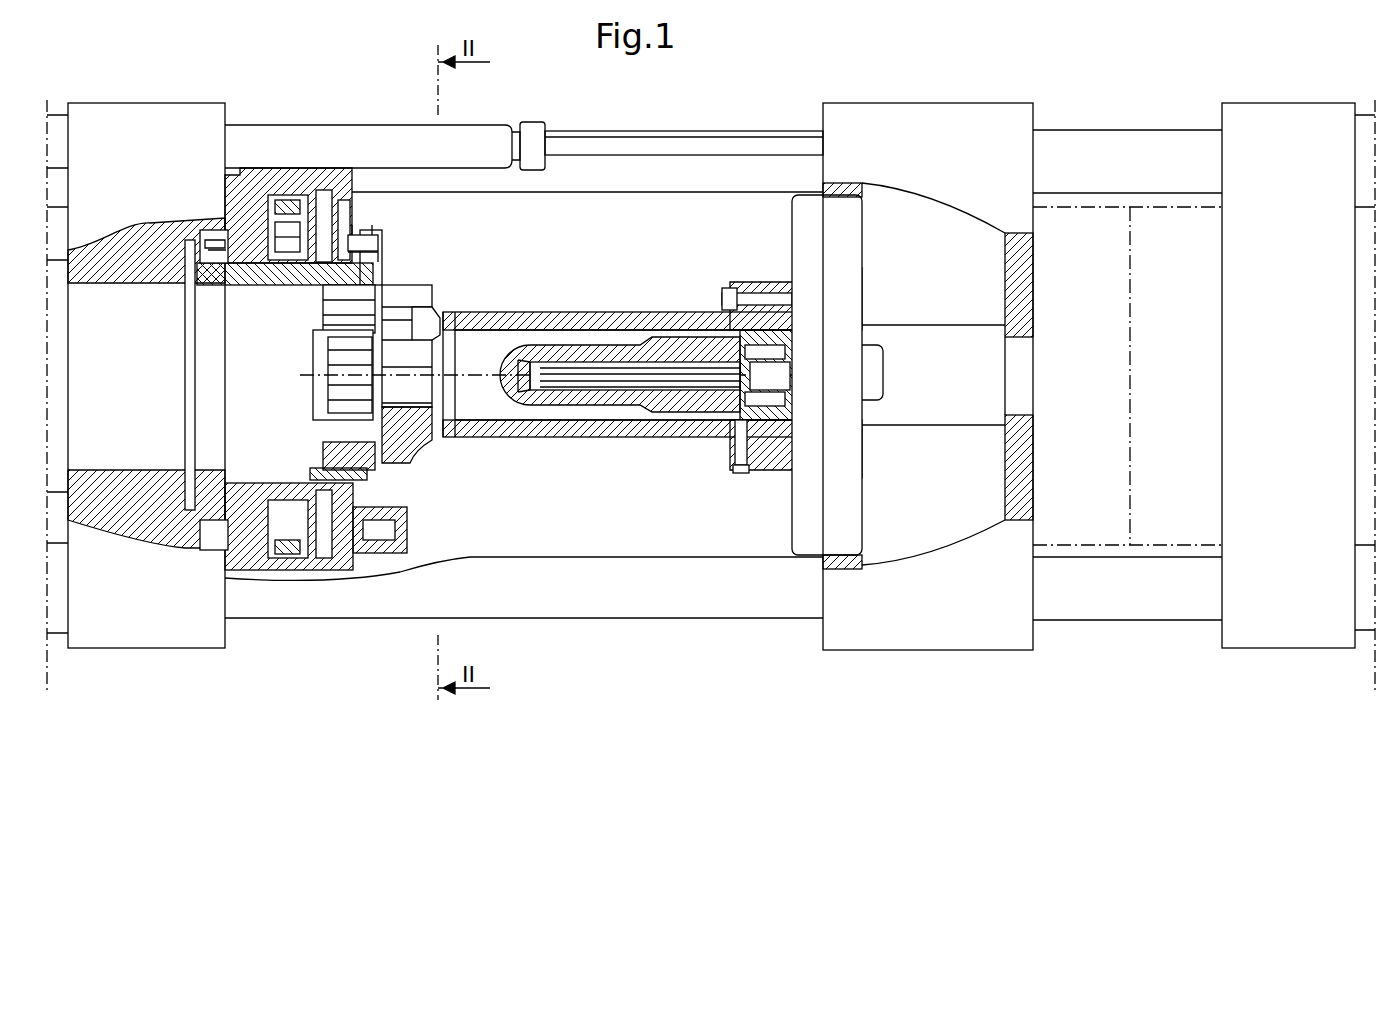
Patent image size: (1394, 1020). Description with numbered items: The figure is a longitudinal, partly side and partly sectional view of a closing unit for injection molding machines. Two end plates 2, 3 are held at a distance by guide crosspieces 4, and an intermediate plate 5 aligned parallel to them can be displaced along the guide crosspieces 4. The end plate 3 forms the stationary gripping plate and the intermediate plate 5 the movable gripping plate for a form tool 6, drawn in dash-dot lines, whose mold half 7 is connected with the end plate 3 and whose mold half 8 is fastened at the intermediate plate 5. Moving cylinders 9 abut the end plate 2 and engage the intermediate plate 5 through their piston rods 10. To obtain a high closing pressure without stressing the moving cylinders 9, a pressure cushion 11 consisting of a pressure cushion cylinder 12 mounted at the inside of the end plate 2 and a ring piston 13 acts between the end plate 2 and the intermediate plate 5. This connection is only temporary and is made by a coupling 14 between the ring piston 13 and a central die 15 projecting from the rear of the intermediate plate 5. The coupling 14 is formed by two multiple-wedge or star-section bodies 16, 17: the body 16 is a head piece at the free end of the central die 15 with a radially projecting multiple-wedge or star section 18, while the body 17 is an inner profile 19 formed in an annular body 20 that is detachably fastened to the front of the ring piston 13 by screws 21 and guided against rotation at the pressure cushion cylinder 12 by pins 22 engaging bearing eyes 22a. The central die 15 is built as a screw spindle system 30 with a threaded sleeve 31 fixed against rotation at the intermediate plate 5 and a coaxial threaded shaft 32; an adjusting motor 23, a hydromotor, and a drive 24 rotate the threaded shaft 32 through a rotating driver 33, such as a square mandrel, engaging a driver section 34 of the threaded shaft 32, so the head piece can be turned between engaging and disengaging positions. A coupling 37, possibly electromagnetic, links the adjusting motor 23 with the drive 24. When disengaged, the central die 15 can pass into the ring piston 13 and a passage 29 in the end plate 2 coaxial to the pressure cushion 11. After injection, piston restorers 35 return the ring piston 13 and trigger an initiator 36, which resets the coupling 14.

The end plate 2 is at (145, 125).
The end plate 3 is at (1275, 145).
The guide crosspieces 4 is at (622, 175).
The intermediate plate 5 is at (938, 135).
The form tool 6 is at (1160, 215).
The mold half 7 is at (1175, 525).
The mold half 8 is at (1090, 530).
The moving cylinders 9 is at (545, 140).
The piston rods 10 is at (693, 145).
The pressure cushion 11 is at (300, 565).
The pressure cushion cylinder 12 is at (283, 180).
The ring piston 13 is at (320, 180).
The coupling 14 is at (400, 455).
The central die 15 is at (590, 410).
The multiple-wedge or star-section body 16 is at (405, 313).
The multiple-wedge or star-section body 17 is at (340, 300).
The multiple-wedge or star section 18 is at (392, 292).
The inner profile 19 is at (340, 315).
The annular body 20 is at (330, 442).
The screws 21 is at (325, 458).
The pins 22 is at (378, 240).
The bearing eyes 22a is at (376, 262).
The adjusting motor 23 is at (880, 375).
The drive 24 is at (532, 400).
The passage 29 is at (142, 367).
The screw spindle system 30 is at (518, 355).
The threaded sleeve 31 is at (620, 437).
The threaded shaft 32 is at (486, 405).
The rotating driver 33 is at (650, 365).
The driver section 34 is at (598, 355).
The piston restorers 35 is at (388, 552).
The initiator 36 is at (368, 215).
The coupling 37 is at (757, 425).